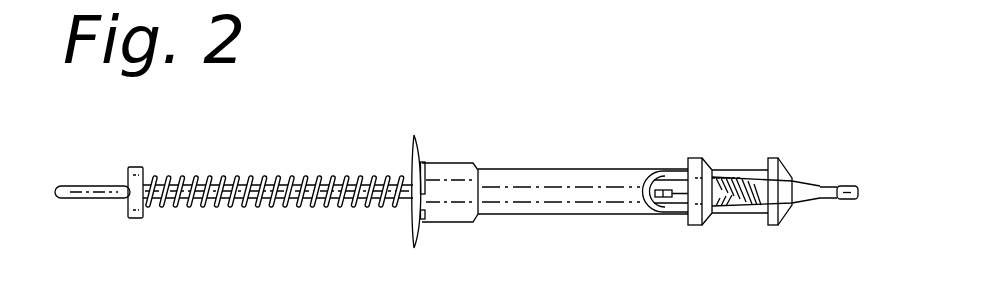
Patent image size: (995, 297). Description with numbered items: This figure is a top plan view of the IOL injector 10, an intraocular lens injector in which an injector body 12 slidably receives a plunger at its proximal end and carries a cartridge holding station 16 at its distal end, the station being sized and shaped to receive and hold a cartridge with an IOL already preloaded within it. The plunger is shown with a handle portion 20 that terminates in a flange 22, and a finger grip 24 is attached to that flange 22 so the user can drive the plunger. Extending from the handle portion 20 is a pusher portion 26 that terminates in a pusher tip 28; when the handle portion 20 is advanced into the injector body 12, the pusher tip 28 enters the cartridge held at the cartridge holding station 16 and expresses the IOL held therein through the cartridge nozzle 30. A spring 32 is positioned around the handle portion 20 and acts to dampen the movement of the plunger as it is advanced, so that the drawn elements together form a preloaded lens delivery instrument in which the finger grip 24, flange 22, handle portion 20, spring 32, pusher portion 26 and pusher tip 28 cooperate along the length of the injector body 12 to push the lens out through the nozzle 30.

The IOL injector 10 is at (405, 121).
The injector body 12 is at (535, 182).
The cartridge holding station 16 is at (728, 200).
The handle portion 20 is at (243, 185).
The flange 22 is at (137, 167).
The finger grip 24 is at (87, 192).
The pusher portion 26 is at (655, 190).
The pusher tip 28 is at (676, 188).
The cartridge nozzle 30 is at (848, 184).
The spring 32 is at (280, 208).